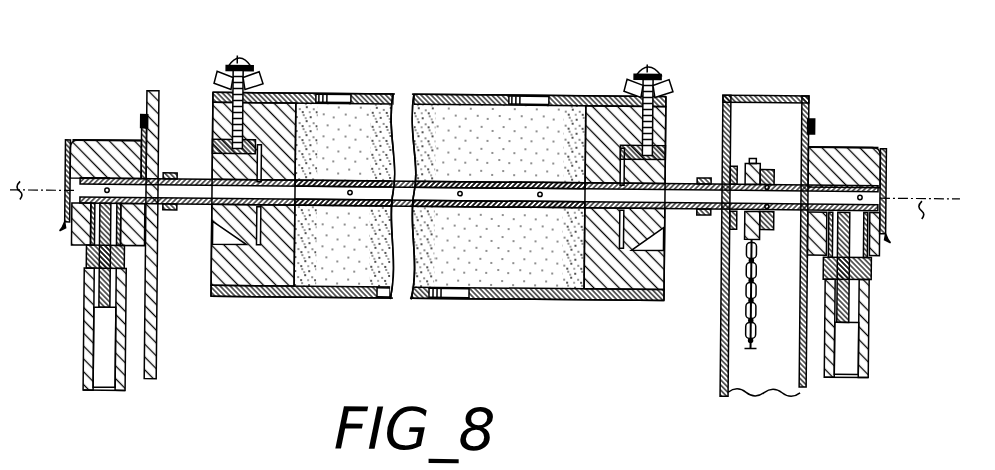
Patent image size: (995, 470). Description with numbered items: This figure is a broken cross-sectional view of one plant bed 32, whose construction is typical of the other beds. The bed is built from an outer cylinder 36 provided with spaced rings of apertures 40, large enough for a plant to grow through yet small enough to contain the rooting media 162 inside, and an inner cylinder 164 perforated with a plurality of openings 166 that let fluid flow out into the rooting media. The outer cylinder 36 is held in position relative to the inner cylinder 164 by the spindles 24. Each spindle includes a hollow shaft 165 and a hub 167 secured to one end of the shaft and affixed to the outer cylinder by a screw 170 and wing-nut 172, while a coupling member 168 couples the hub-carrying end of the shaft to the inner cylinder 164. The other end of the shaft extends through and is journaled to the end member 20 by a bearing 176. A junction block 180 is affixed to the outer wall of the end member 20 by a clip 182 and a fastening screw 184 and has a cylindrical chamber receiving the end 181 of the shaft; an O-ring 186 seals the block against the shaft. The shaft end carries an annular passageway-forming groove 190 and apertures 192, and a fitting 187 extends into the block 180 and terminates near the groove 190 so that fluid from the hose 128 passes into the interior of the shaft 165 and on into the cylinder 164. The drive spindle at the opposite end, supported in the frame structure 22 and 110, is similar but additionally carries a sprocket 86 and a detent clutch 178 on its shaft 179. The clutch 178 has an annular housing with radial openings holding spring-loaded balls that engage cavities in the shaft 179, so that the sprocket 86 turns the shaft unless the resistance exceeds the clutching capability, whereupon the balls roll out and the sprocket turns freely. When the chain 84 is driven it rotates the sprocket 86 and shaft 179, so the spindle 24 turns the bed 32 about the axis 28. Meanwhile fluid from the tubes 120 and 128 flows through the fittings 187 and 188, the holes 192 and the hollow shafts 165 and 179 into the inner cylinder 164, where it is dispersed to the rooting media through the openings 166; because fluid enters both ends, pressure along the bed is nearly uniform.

The end member 20 is at (160, 345).
The frame channel 22 is at (722, 378).
The spindle 24 is at (186, 205).
The axis 28 is at (482, 189).
The plant bed 32 is at (470, 90).
The outer cylinder 36 is at (504, 295).
The apertures 40 is at (332, 92).
The chain 84 is at (758, 295).
The sprocket 86 is at (738, 160).
The frame wall 110 is at (808, 372).
The tube 120 is at (870, 345).
The hose 128 is at (85, 350).
The rooting media 162 is at (400, 105).
The inner cylinder 164 is at (344, 203).
The hollow shaft 165 is at (200, 177).
The openings 166 is at (350, 178).
The hub 167 is at (240, 280).
The coupling member 168 is at (312, 222).
The screw 170 is at (230, 58).
The wing-nut 172 is at (258, 76).
The bearing 176 is at (172, 172).
The detent clutch 178 is at (754, 156).
The shaft 179 is at (778, 212).
The junction block 180 is at (72, 145).
The end of shaft 181 is at (80, 177).
The clip 182 is at (93, 139).
The fastening screw 184 is at (141, 118).
The O-ring 186 is at (112, 140).
The fitting 187 is at (86, 258).
The fitting 188 is at (872, 260).
The groove 190 is at (66, 156).
The apertures 192 is at (105, 190).